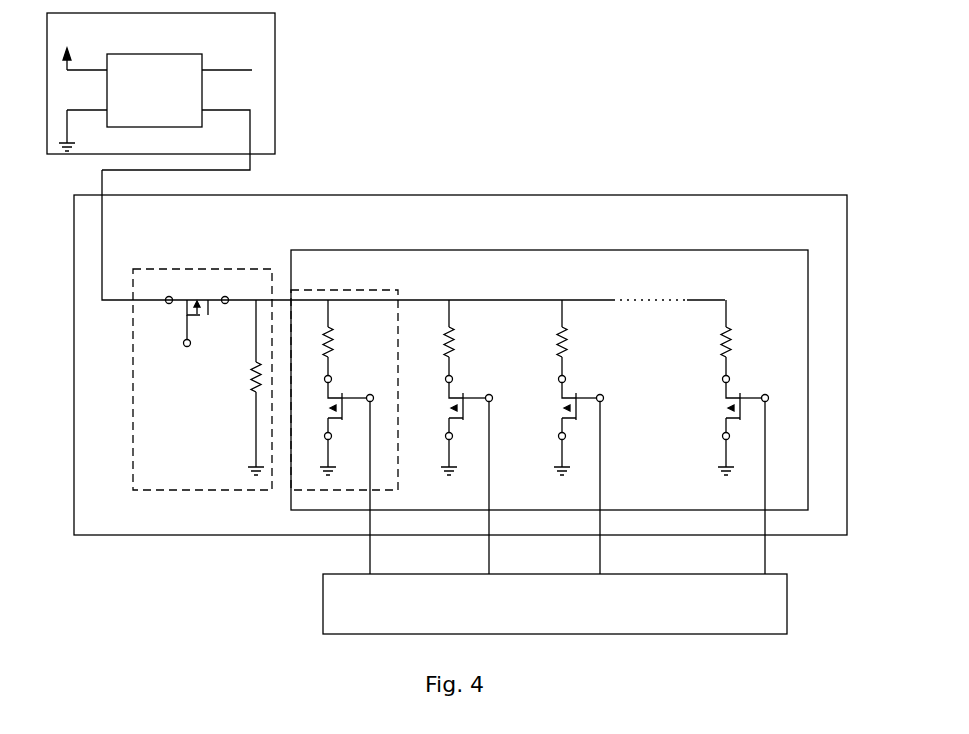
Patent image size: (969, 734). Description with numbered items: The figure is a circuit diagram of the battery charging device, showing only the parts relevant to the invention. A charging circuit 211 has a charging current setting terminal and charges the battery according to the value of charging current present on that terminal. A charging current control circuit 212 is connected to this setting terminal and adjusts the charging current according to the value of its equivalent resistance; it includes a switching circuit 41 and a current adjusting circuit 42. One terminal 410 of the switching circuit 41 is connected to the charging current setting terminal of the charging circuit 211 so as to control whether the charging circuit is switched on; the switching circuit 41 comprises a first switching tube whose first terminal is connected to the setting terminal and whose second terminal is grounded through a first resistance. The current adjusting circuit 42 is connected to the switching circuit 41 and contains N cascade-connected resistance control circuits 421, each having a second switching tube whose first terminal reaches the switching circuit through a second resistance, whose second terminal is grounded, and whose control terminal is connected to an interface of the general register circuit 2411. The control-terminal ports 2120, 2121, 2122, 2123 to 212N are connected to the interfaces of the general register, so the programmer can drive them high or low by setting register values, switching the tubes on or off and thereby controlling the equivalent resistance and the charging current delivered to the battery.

The charging circuit 211 is at (275, 77).
The charging current control circuit 212 is at (472, 195).
The switching circuit 41 is at (218, 242).
The current adjusting circuit 42 is at (527, 250).
The resistance control circuit 421 is at (343, 290).
The terminal of the switching circuit 410 is at (408, 247).
The port of control terminal c 2120 is at (188, 341).
The port of control terminal c 2121 is at (368, 475).
The port of control terminal c 2122 is at (487, 475).
The port of control terminal c 2123 is at (602, 475).
The port of control terminal c 212N is at (766, 475).
The general register circuit 2411 is at (787, 603).